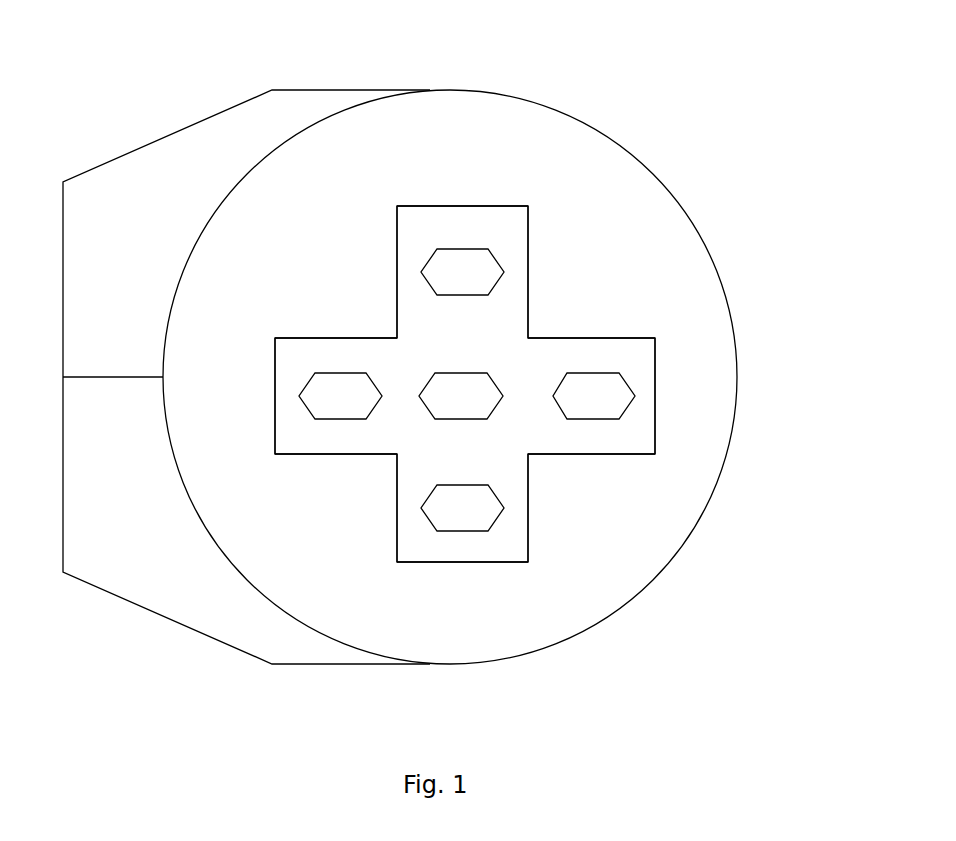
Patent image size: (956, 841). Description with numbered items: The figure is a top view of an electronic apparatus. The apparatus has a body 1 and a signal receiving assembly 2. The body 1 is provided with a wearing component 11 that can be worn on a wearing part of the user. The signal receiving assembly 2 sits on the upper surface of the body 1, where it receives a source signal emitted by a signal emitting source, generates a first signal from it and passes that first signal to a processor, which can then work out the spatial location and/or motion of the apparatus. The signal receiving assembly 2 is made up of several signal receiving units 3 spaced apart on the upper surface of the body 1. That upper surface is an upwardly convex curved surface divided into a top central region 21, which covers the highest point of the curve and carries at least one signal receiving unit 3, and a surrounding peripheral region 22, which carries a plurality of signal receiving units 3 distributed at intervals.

The body 1 is at (179, 287).
The wearing component 11 is at (617, 142).
The signal receiving assembly 2 is at (528, 298).
The top central region 21 is at (505, 425).
The peripheral region 22 is at (505, 548).
The signal receiving unit 3 is at (457, 247).